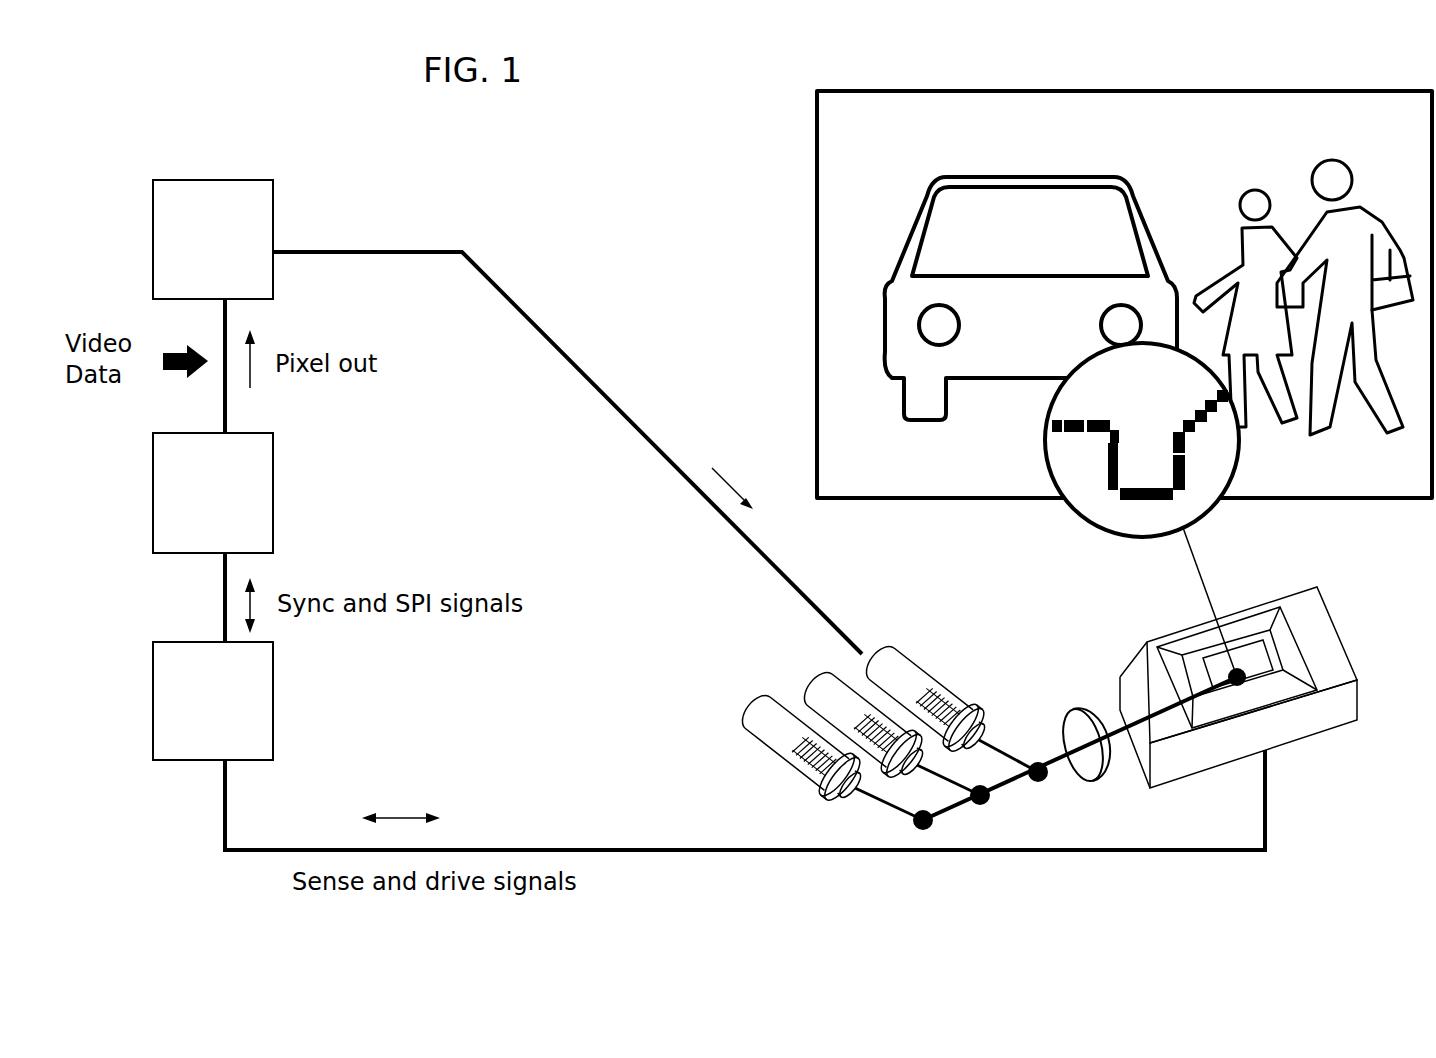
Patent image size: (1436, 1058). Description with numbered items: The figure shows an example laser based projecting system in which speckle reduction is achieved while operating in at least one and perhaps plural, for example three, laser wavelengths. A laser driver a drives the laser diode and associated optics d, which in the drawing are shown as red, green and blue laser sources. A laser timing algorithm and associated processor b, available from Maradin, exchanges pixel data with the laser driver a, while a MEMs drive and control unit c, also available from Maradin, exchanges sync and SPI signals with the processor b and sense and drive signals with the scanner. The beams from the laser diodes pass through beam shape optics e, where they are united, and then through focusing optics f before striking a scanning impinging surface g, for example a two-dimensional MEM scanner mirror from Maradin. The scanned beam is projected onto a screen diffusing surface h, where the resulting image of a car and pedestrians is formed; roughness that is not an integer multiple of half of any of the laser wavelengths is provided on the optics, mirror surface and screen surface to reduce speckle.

The laser driver a is at (213, 239).
The laser timing algorithm and associated processor b is at (213, 493).
The MEMs drive and control unit c is at (213, 701).
The laser diode and associated optics d is at (843, 716).
The beam shape optics e is at (1033, 755).
The focusing optics f is at (1083, 762).
The scanning impinging surface g is at (1254, 644).
The screen diffusing surface h is at (1124, 314).